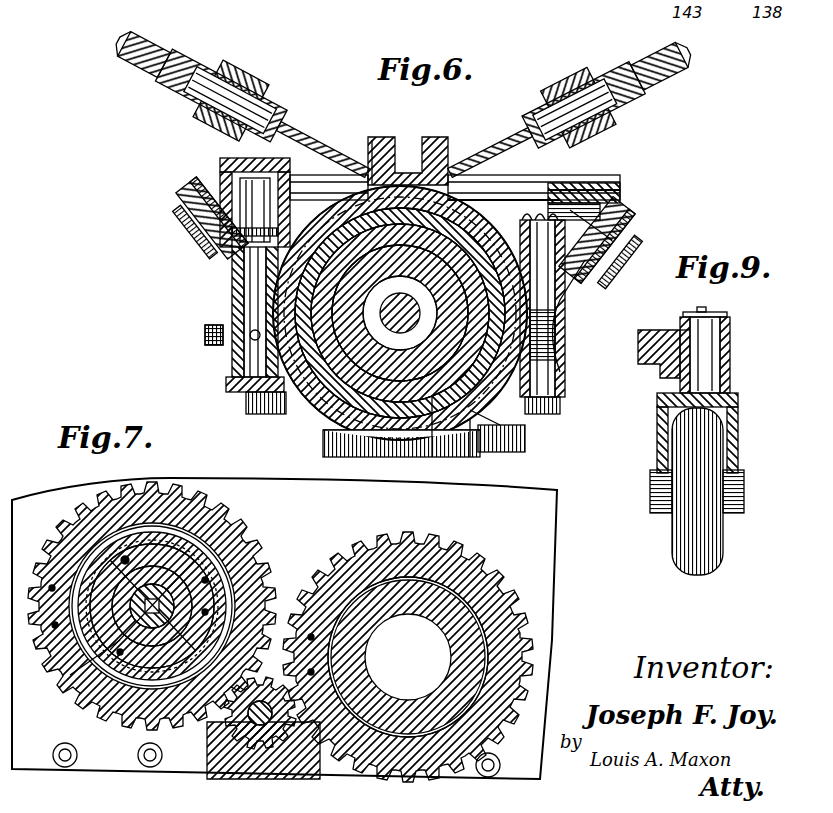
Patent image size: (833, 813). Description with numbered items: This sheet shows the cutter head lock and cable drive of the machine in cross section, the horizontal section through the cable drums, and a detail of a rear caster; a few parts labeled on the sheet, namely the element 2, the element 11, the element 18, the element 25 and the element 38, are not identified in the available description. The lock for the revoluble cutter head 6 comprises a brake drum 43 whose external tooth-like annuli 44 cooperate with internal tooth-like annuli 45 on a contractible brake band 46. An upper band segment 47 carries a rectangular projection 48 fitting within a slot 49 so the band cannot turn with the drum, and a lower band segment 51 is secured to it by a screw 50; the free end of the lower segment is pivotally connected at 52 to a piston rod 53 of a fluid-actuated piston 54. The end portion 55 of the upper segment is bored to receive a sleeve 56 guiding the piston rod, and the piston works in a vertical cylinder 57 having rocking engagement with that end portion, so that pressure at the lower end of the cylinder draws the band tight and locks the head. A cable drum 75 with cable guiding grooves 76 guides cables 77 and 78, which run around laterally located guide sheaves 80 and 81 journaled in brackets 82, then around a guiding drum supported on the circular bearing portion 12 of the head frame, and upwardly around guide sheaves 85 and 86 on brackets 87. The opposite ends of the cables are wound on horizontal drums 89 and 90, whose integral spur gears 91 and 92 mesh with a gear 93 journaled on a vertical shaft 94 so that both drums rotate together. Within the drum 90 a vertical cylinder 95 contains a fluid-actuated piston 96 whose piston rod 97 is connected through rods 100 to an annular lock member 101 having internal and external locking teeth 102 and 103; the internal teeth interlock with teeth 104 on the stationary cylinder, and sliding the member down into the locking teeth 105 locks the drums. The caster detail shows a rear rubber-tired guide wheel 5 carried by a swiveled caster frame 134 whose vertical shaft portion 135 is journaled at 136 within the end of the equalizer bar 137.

In FIG. 6, the frame bar 2 is at (572, 182).
In FIG. 9, the rear rubber-tired guide wheels 5 is at (712, 545).
In FIG. 6, the revoluble cutter head 6 is at (560, 372).
In FIG. 6, the pad 11 is at (470, 450).
In FIG. 6, the circular bearing portion 12 is at (432, 445).
In FIG. 6, the foot block 18 is at (505, 450).
In FIG. 6, the foot 25 is at (548, 398).
In FIG. 6, the nut 38 is at (205, 336).
In FIG. 6, the brake drum 43 is at (262, 390).
In FIG. 6, the external tooth-like annuli 44 is at (305, 360).
In FIG. 6, the internal tooth-like annuli 45 is at (330, 442).
In FIG. 6, the contractible brake band 46 is at (330, 330).
In FIG. 6, the upper band segment 47 is at (336, 195).
In FIG. 6, the rectangular projection 48 is at (432, 140).
In FIG. 6, the slot 49 is at (373, 142).
In FIG. 6, the screw 50 is at (545, 300).
In FIG. 6, the lower band segment 51 is at (488, 418).
In FIG. 6, the pivotal connection 52 is at (250, 355).
In FIG. 6, the piston rod 53 is at (230, 310).
In FIG. 6, the fluid-actuated piston 54 is at (222, 244).
In FIG. 6, the end portion 55 is at (228, 283).
In FIG. 6, the sleeve 56 is at (240, 268).
In FIG. 6, the vertical cylinder 57 is at (220, 162).
In FIG. 6, the cable drum 75 is at (592, 195).
In FIG. 6, the cable guiding grooves 76 is at (600, 215).
In FIG. 6, the cable 77 is at (490, 140).
In FIG. 6, the cable 78 is at (300, 125).
In FIG. 6, the guide sheave 80 is at (612, 226).
In FIG. 6, the guide sheave 81 is at (190, 196).
In FIG. 6, the brackets 82 is at (185, 216).
In FIG. 6, the guide sheave 85 is at (668, 88).
In FIG. 6, the guide sheave 86 is at (210, 60).
In FIG. 6, the brackets 87 is at (195, 108).
In FIG. 7, the horizontal drum 89 is at (470, 572).
In FIG. 7, the horizontal drum 90 is at (176, 490).
In FIG. 7, the spur gear 91 is at (432, 546).
In FIG. 7, the spur gear 92 is at (222, 575).
In FIG. 7, the gear 93 is at (212, 776).
In FIG. 7, the vertical shaft 94 is at (222, 722).
In FIG. 7, the vertical cylinder 95 is at (148, 530).
In FIG. 7, the fluid-actuated piston 96 is at (215, 590).
In FIG. 7, the piston rod 97 is at (210, 600).
In FIG. 7, the rods 100 is at (95, 560).
In FIG. 7, the annular lock member 101 is at (172, 590).
In FIG. 7, the internal locking teeth 102 is at (70, 675).
In FIG. 7, the external locking teeth 103 is at (192, 555).
In FIG. 7, the teeth 104 is at (118, 716).
In FIG. 7, the locking teeth 105 is at (100, 560).
In FIG. 9, the swiveled caster frames 134 is at (738, 398).
In FIG. 9, the vertical shaft portions 135 is at (731, 350).
In FIG. 9, the journal 136 is at (680, 330).
In FIG. 9, the equalizer bar 137 is at (652, 372).